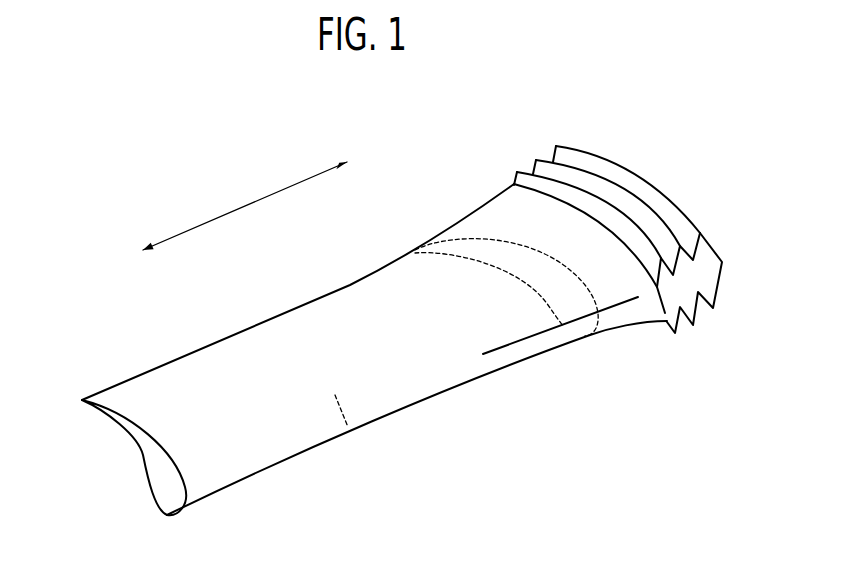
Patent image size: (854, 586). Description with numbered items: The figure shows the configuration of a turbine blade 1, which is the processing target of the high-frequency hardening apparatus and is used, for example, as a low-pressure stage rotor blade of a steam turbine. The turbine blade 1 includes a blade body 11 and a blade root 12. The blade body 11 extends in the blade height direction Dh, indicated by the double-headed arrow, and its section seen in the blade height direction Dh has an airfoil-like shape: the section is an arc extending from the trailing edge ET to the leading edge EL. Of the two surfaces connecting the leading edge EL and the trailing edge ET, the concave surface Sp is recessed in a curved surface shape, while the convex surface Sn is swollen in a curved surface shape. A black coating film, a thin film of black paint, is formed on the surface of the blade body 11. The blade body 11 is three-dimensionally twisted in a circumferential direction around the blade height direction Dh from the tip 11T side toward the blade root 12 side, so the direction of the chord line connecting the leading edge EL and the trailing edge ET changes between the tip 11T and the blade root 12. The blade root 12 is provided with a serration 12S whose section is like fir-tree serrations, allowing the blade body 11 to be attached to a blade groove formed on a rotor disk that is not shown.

The turbine blade 1 is at (78, 225).
The blade body 11 is at (423, 380).
The tip 11T is at (147, 452).
The blade root 12 is at (636, 172).
The serration 12S is at (546, 161).
The trailing edge ET is at (176, 360).
The leading edge EL is at (278, 465).
The convex surface Sn is at (313, 338).
The concave surface Sp is at (348, 427).
The blade height direction Dh is at (245, 206).